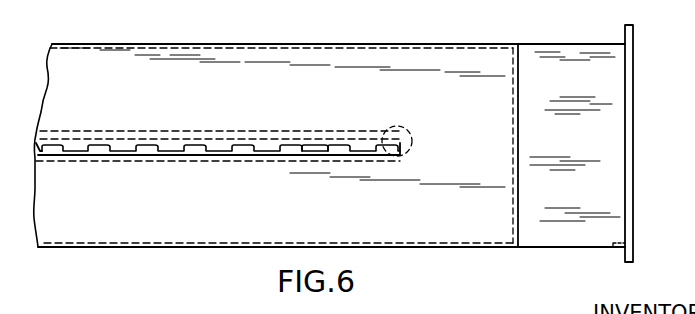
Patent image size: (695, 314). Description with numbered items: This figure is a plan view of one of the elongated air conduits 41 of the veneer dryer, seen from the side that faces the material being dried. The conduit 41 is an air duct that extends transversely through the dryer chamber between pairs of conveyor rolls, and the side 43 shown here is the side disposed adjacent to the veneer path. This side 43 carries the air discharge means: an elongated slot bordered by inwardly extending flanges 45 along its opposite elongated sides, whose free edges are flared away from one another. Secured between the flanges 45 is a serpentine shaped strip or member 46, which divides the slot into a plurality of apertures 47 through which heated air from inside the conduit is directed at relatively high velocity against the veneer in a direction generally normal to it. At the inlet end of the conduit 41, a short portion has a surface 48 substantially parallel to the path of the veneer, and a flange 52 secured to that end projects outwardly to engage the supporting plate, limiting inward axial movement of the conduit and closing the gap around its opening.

The air duct or conduit 41 is at (288, 26).
The side of conduit 43 is at (123, 68).
The inwardly extending flange 45 is at (410, 141).
The serpentine shaped strip or member 46 is at (307, 148).
The aperture 47 is at (243, 148).
The surface parallel to veneer path 48 is at (608, 122).
The flange 52 is at (630, 182).